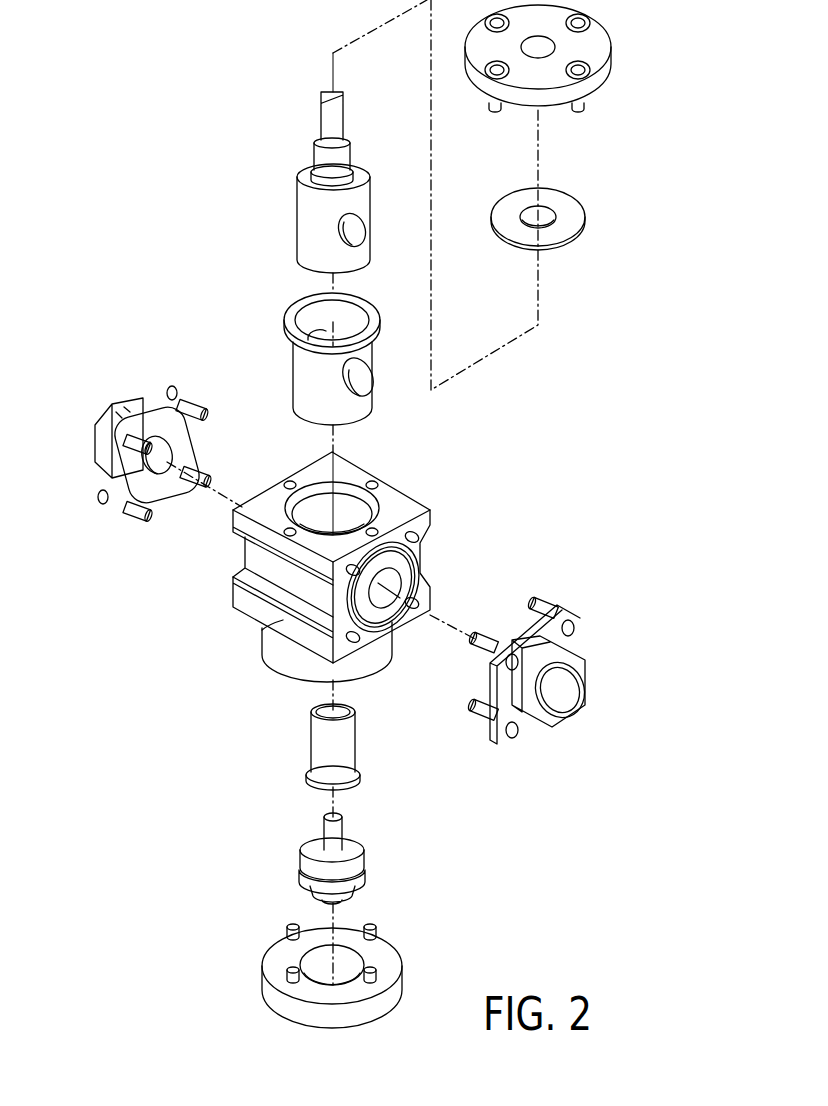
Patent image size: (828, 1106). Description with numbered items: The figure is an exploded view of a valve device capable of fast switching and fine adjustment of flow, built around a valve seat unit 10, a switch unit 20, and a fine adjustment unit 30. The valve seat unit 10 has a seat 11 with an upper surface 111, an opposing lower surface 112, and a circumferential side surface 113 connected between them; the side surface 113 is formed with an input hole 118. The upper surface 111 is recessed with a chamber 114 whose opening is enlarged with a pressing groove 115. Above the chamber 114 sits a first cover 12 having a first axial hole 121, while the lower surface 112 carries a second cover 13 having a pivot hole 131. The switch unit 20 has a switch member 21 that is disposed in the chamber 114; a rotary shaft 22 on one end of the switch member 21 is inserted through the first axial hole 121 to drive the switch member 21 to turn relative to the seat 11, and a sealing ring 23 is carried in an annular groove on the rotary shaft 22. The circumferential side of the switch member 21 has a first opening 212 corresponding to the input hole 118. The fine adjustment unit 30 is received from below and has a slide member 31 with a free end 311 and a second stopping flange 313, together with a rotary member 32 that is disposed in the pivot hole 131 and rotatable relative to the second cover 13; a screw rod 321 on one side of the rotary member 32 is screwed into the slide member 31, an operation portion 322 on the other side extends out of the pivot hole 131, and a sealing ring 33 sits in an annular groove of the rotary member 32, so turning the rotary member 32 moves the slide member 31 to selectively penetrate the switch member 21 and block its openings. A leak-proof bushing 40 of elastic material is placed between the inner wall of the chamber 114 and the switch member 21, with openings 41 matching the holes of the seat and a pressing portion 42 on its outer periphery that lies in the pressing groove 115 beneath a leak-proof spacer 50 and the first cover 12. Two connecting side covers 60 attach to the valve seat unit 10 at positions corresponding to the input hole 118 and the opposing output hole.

The valve seat unit 10 is at (365, 567).
The seat 11 is at (421, 586).
The first cover 12 is at (569, 59).
The second cover 13 is at (315, 976).
The switch unit 20 is at (316, 180).
The switch member 21 is at (321, 217).
The rotary shaft 22 is at (322, 122).
The sealing ring 23 is at (312, 170).
The fine adjustment unit 30 is at (328, 867).
The slide member 31 is at (344, 752).
The rotary member 32 is at (357, 853).
The sealing ring 33 is at (363, 872).
The leak-proof bushing 40 is at (330, 360).
The openings 41 is at (363, 370).
The pressing portion 42 is at (288, 335).
The leak-proof spacer 50 is at (590, 217).
The connecting side covers 60 is at (125, 403).
The upper surface 111 is at (410, 507).
The lower surface 112 is at (278, 667).
The circumferential side surface 113 is at (363, 637).
The chamber 114 is at (377, 510).
The pressing groove 115 is at (313, 490).
The input hole 118 is at (393, 588).
The first axial hole 121 is at (552, 47).
The pivot hole 131 is at (347, 970).
The first opening 212 is at (360, 233).
The free end 311 is at (348, 713).
The second stopping flange 313 is at (357, 773).
The screw rod 321 is at (327, 832).
The operation portion 322 is at (315, 898).